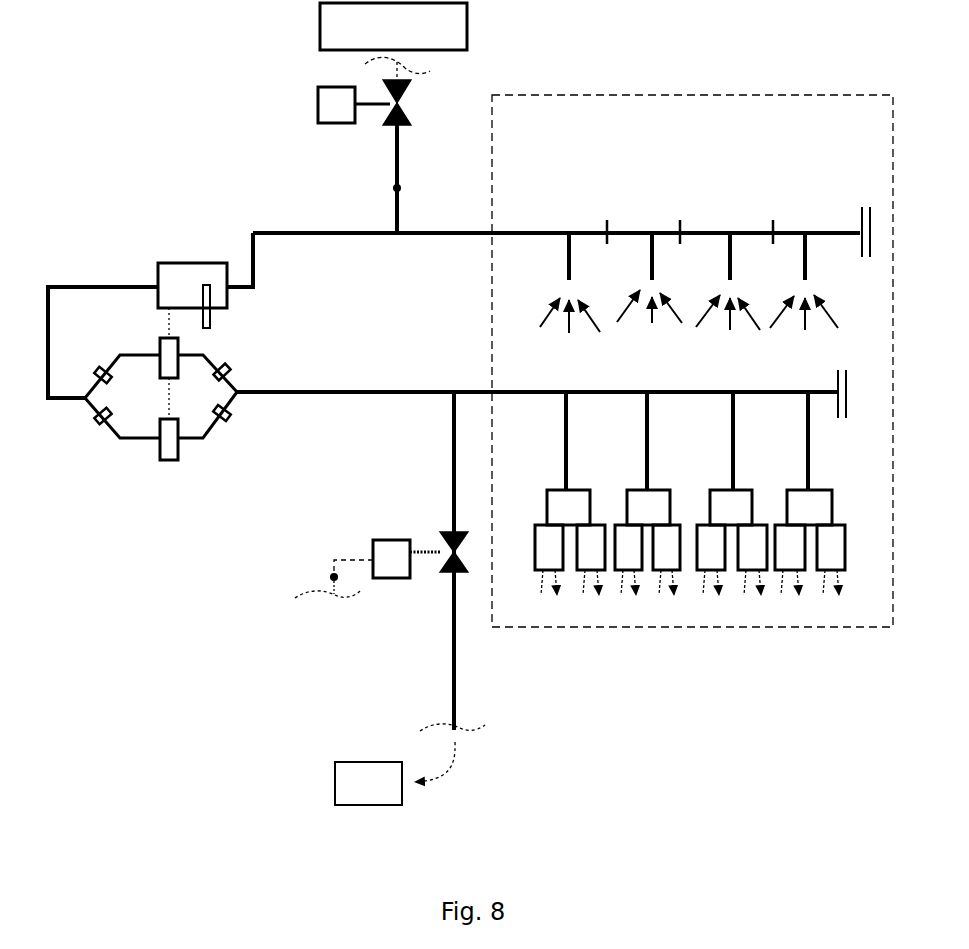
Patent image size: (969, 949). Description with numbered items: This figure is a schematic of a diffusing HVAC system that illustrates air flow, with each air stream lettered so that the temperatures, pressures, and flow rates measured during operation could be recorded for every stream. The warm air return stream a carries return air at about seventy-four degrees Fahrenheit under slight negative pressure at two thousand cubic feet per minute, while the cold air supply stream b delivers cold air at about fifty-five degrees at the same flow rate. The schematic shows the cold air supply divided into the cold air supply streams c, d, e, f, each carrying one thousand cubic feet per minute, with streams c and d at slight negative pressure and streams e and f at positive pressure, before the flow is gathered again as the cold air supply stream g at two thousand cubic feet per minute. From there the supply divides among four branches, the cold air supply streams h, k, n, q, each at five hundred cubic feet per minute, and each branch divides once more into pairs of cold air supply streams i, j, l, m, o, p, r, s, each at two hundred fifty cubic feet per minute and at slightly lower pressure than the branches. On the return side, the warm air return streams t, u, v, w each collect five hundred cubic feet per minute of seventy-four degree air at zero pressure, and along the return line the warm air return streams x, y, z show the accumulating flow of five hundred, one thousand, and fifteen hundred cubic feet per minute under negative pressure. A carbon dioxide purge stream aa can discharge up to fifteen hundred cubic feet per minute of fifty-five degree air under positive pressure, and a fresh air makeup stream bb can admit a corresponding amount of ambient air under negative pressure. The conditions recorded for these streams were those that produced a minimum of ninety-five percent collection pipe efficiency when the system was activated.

The warm air return stream a is at (233, 285).
The cold air supply stream b is at (103, 325).
The cold air supply stream c is at (122, 447).
The cold air supply stream d is at (115, 363).
The cold air supply stream e is at (205, 355).
The cold air supply stream f is at (210, 442).
The cold air supply stream g is at (526, 400).
The cold air supply stream h is at (565, 452).
The cold air supply stream i is at (547, 515).
The cold air supply stream j is at (590, 512).
The cold air supply stream k is at (650, 432).
The cold air supply stream l is at (627, 512).
The cold air supply stream m is at (670, 512).
The cold air supply stream n is at (735, 430).
The cold air supply stream o is at (710, 512).
The cold air supply stream p is at (753, 510).
The cold air supply stream q is at (812, 463).
The cold air supply stream r is at (787, 510).
The cold air supply stream s is at (833, 513).
The warm air return stream t is at (570, 299).
The warm air return stream u is at (649, 295).
The warm air return stream v is at (728, 297).
The warm air return stream w is at (804, 299).
The warm air return stream x is at (774, 217).
The warm air return stream y is at (684, 216).
The warm air return stream z is at (606, 217).
The CO2 purge stream aa is at (453, 722).
The fresh air makeup stream bb is at (393, 189).